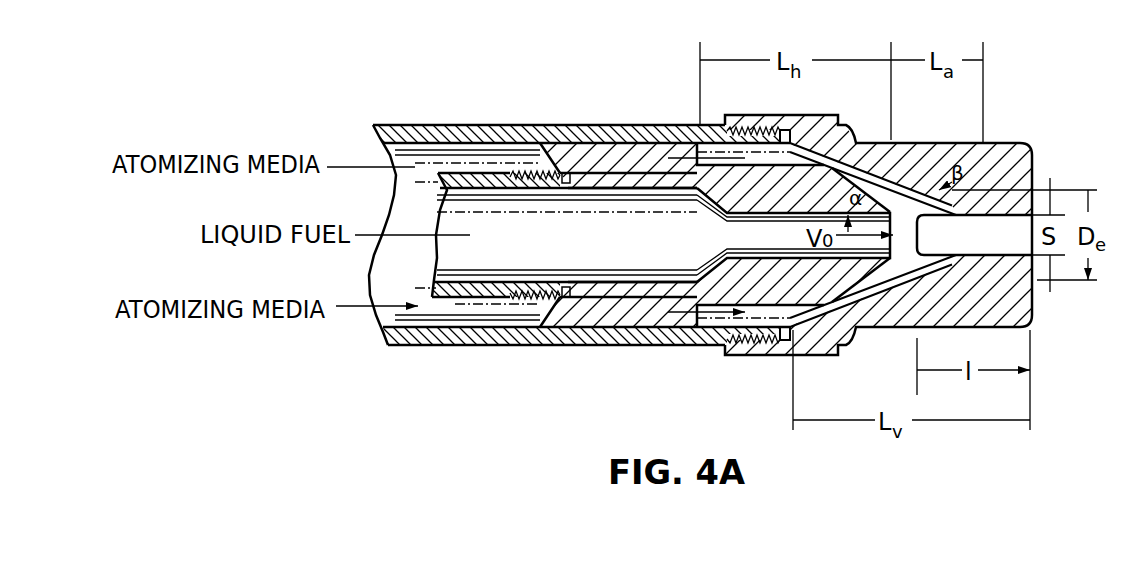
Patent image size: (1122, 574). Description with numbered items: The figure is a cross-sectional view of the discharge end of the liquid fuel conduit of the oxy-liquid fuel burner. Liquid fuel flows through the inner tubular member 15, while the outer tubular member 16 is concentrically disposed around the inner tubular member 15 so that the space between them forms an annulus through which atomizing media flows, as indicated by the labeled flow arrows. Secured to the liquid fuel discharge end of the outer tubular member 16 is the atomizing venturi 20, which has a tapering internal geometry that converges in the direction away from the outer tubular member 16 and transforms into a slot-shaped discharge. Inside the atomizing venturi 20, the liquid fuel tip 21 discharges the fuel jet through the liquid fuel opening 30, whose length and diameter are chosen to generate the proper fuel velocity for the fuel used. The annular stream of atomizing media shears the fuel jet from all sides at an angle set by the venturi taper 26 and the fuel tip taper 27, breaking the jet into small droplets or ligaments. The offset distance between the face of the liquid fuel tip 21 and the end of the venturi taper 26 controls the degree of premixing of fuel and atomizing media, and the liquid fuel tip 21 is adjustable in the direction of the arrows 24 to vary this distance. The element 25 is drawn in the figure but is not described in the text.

The inner tubular member 15 is at (490, 300).
The outer tubular member 16 is at (531, 124).
The atomizing venturi 20 is at (986, 142).
The liquid fuel tip 21 is at (657, 325).
The arrows 24 is at (615, 262).
The lower conical surface 25 is at (912, 245).
The venturi taper 26 is at (926, 185).
The fuel tip taper 27 is at (861, 184).
The liquid fuel opening 30 is at (763, 248).